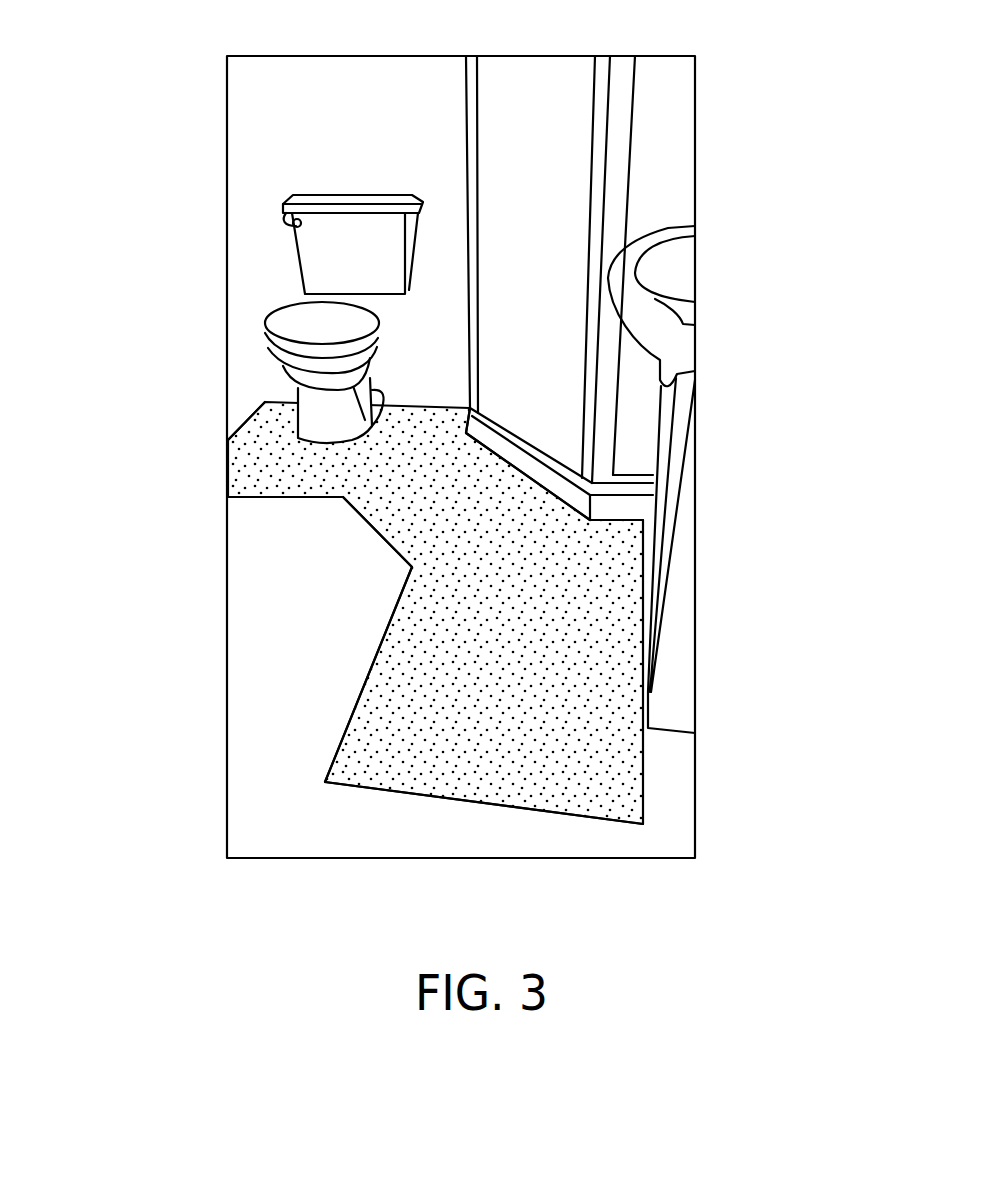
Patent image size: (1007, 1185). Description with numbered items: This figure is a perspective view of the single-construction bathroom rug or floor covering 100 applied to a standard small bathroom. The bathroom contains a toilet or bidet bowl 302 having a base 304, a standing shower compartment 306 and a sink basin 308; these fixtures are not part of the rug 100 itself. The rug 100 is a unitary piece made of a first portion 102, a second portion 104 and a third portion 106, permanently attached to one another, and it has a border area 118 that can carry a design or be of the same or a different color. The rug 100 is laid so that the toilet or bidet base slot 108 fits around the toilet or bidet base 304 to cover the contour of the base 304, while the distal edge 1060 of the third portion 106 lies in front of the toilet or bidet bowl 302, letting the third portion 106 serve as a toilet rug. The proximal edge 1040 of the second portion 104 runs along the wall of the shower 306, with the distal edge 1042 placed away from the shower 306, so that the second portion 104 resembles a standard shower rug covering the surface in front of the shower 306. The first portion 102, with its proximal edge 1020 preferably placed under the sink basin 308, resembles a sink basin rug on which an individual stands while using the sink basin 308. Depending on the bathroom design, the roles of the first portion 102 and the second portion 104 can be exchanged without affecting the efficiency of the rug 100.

The rug or floor covering 100 is at (214, 204).
The first portion 102 is at (580, 745).
The second portion 104 is at (415, 512).
The distal edge 1042 is at (407, 555).
The proximal edge 1020 is at (378, 677).
The third portion 106 is at (257, 466).
The distal edge 1060 is at (245, 497).
The toilet or bidet base slot 108 is at (372, 393).
The toilet or bidet bowl 302 is at (282, 355).
The base 304 is at (327, 428).
The standing shower compartment 306 is at (607, 165).
The sink basin 308 is at (645, 293).
The proximal edge 1040 is at (643, 522).
The border area 118 is at (632, 606).